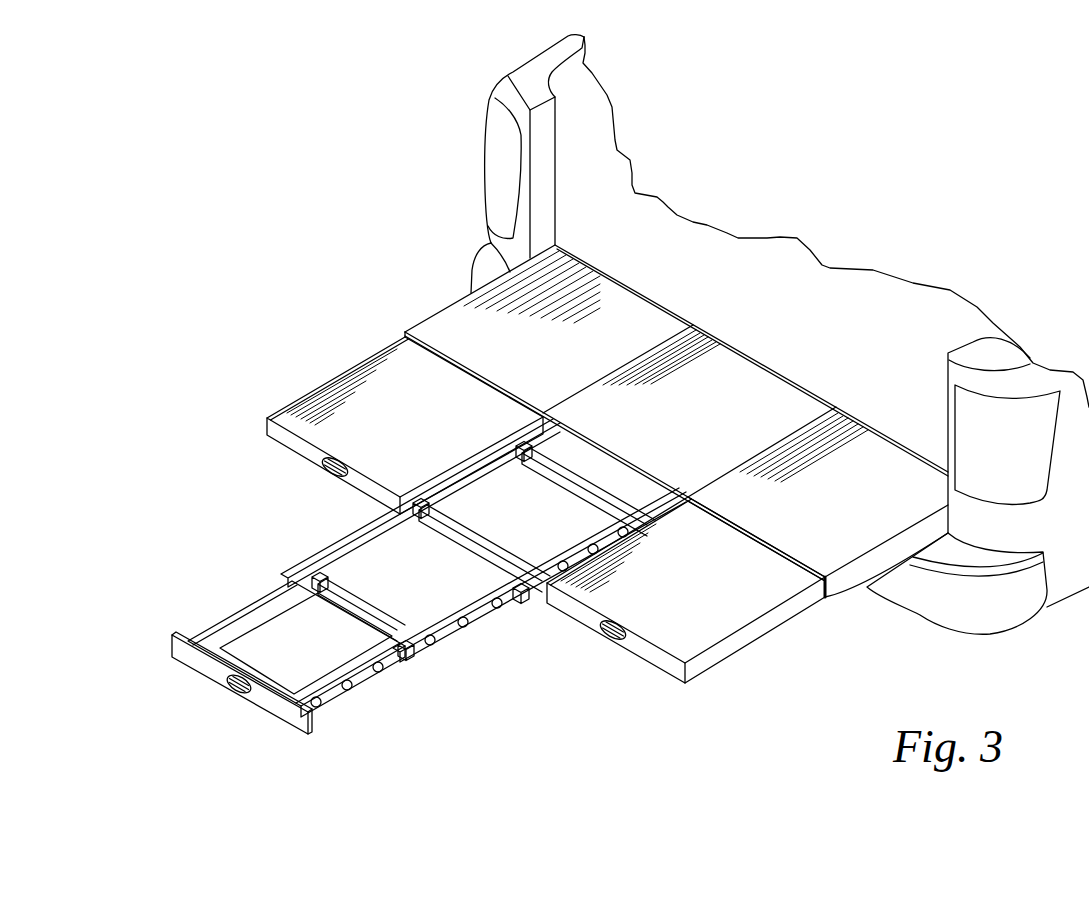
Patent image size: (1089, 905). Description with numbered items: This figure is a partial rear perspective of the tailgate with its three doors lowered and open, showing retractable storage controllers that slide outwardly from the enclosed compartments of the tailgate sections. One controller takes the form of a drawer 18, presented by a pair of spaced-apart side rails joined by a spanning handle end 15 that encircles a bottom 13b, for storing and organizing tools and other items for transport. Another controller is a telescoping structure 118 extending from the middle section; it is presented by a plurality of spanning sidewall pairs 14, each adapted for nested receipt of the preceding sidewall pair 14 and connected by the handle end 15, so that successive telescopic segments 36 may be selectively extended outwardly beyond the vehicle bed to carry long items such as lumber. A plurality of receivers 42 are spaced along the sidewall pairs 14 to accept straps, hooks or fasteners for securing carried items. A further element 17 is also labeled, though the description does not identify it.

The bottom 13b is at (364, 406).
The spanning sidewall pair 14 is at (286, 676).
The handle end 15 is at (278, 434).
The load floor edge 17 is at (828, 597).
The drawer 18 is at (384, 442).
The telescopic segment 36 is at (505, 519).
The receiver 42 is at (372, 672).
The telescoping structure 118 is at (256, 713).